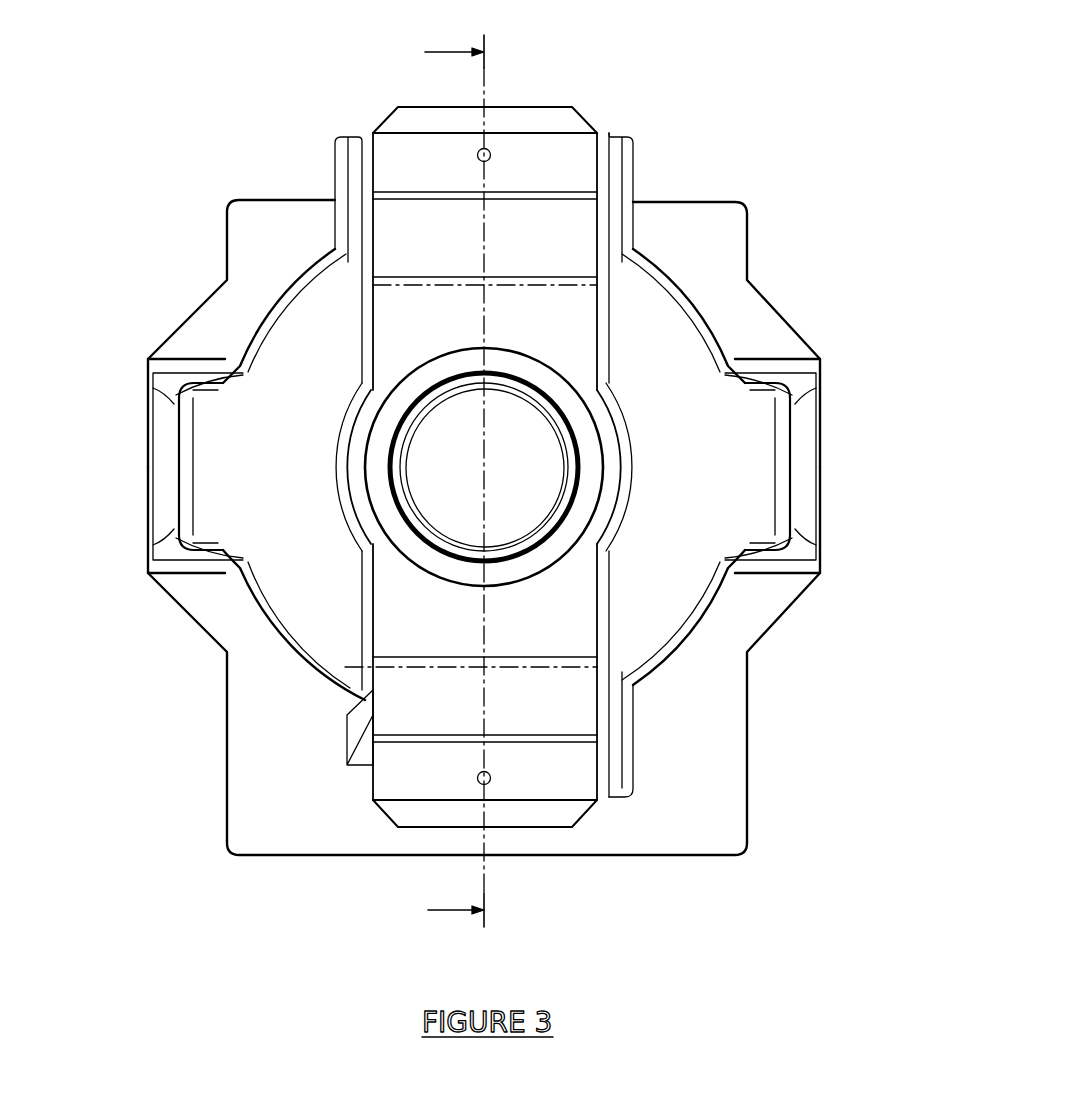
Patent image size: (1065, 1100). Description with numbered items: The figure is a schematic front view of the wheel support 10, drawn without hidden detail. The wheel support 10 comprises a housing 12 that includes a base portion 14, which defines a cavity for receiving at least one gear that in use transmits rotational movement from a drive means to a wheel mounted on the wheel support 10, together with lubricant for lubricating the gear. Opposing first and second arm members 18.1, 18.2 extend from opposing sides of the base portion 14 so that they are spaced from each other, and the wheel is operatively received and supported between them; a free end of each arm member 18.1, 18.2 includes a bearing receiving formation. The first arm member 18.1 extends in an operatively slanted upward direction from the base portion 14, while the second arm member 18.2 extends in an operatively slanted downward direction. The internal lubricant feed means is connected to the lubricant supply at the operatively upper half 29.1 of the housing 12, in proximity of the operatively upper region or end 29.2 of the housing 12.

The wheel support 10 is at (481, 472).
The housing 12 is at (200, 768).
The base portion 14 is at (757, 333).
The first arm member 18.1 is at (524, 147).
The second arm member 18.2 is at (520, 775).
The operatively upper half 29.1 is at (125, 274).
The operatively upper region 29.2 is at (350, 107).